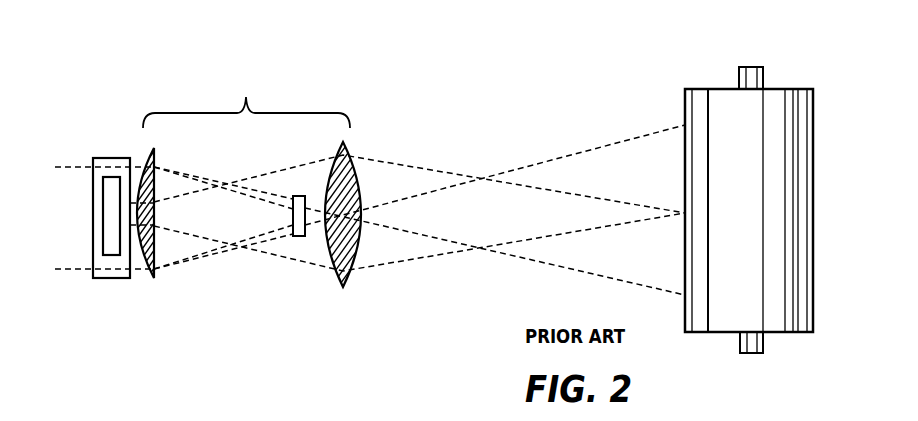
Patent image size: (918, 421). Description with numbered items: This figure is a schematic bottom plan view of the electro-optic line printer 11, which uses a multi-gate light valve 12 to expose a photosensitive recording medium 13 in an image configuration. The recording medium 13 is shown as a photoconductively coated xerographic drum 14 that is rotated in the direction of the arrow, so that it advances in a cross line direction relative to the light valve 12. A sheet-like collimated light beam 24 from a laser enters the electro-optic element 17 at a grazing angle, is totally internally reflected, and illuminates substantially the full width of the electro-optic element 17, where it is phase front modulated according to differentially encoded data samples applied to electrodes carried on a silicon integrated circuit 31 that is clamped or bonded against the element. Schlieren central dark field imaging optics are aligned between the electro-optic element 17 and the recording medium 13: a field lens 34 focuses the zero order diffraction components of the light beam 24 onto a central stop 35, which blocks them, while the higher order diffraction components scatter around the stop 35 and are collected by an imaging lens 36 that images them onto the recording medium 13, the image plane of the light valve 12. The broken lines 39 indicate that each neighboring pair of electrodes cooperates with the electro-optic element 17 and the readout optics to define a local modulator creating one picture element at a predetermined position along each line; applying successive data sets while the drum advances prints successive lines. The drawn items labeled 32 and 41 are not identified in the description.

The electro-optic line printer 11 is at (481, 165).
The multi-gate light valve 12 is at (82, 144).
The photosensitive recording medium 13 is at (728, 190).
The photoconductively coated xerographic drum 14 is at (712, 247).
The electro-optic element 17 is at (107, 280).
The light beam 24 is at (66, 244).
The silicon integrated circuit 31 is at (264, 190).
The light beam 32 is at (244, 228).
The field lens 34 is at (141, 272).
The central stop 35 is at (293, 238).
The imaging lens 36 is at (360, 178).
The broken lines 39 is at (514, 240).
The lamp filament 41 is at (109, 214).